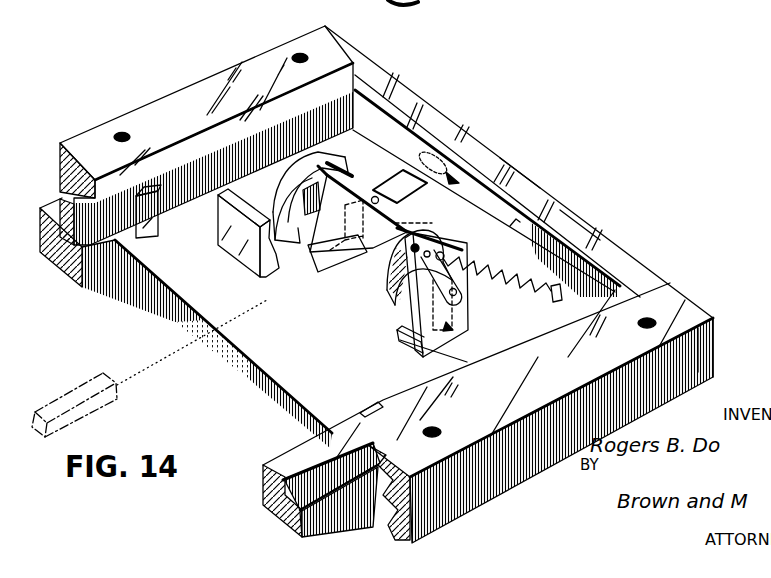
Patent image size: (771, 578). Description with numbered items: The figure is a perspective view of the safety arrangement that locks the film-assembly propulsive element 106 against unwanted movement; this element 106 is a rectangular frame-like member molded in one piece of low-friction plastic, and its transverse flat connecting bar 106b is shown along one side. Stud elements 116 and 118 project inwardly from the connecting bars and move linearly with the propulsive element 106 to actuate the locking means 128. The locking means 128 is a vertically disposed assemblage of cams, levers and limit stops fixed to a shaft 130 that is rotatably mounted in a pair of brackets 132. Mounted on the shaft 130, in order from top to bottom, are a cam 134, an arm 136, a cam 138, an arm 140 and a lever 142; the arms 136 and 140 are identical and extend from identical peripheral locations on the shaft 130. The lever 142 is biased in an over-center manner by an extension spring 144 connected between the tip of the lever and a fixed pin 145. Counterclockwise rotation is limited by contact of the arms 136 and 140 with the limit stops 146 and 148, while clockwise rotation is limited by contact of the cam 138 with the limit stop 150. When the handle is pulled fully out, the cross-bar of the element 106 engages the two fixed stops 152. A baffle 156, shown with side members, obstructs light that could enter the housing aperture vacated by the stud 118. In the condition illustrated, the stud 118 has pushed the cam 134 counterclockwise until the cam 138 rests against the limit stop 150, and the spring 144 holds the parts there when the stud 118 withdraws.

The propulsive element 106 is at (518, 156).
The transverse flat connecting bar 106b is at (515, 222).
The stud element 116 is at (105, 409).
The stud element 118 is at (410, 157).
The propulsive-element locking means 128 is at (476, 186).
The shaft 130 is at (460, 302).
The brackets 132 is at (307, 255).
The cam 134 is at (287, 192).
The arm 136 is at (372, 164).
The cam 138 is at (373, 252).
The arm 140 is at (398, 288).
The lever 142 is at (413, 298).
The extension spring 144 is at (575, 232).
The fixed pin 145 is at (566, 290).
The limit stop 146 is at (430, 224).
The limit stop 148 is at (455, 318).
The limit stop 150 is at (522, 170).
The fixed stops 152 is at (148, 217).
The baffle 156 is at (243, 254).